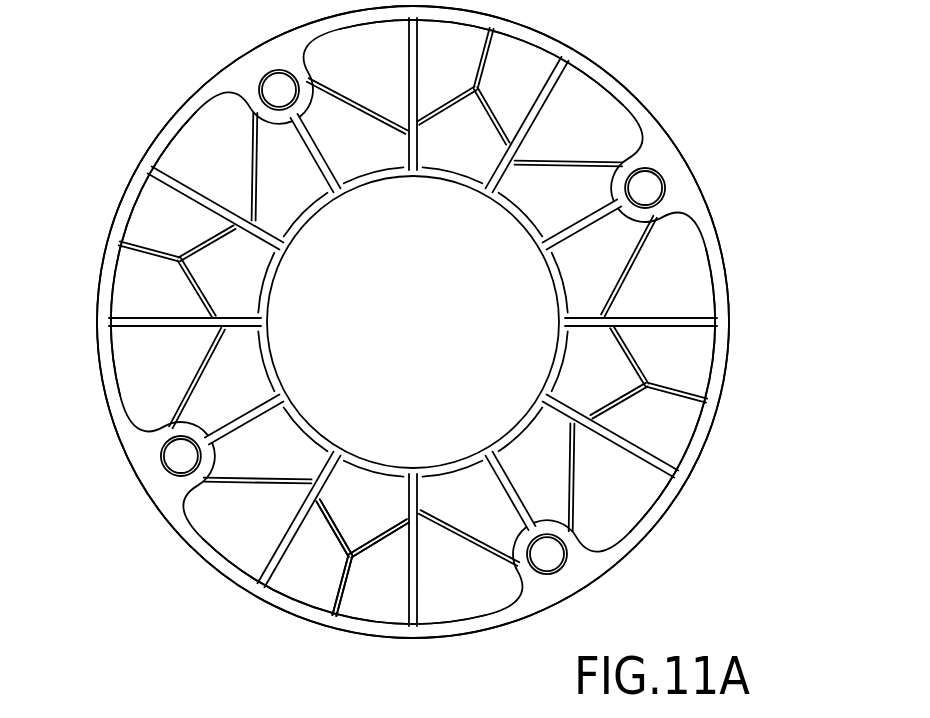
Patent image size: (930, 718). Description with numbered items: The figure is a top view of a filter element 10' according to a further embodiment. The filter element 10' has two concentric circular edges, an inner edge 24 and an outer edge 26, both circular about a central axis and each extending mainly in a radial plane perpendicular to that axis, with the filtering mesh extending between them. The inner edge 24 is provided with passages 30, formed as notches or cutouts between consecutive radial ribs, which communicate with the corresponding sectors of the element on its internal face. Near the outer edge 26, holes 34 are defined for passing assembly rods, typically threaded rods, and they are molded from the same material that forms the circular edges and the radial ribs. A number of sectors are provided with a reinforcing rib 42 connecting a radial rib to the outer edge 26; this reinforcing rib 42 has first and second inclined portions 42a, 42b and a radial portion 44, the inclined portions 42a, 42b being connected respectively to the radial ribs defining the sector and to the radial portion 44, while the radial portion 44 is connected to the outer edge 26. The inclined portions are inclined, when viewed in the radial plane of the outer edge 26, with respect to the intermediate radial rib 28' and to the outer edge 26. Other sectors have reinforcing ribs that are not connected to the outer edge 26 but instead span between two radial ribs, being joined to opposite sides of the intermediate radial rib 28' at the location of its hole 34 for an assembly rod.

The filter element 10' is at (457, 322).
The outer edge 26 is at (152, 140).
The inner edge 24 is at (318, 228).
The passages 30 is at (496, 230).
The holes 34 is at (176, 452).
The intermediate radial rib 28' is at (632, 567).
The reinforcing rib 42 is at (357, 528).
The first inclined portion 42a is at (330, 540).
The second inclined portion 42b is at (378, 545).
The radial portion 44 is at (337, 580).